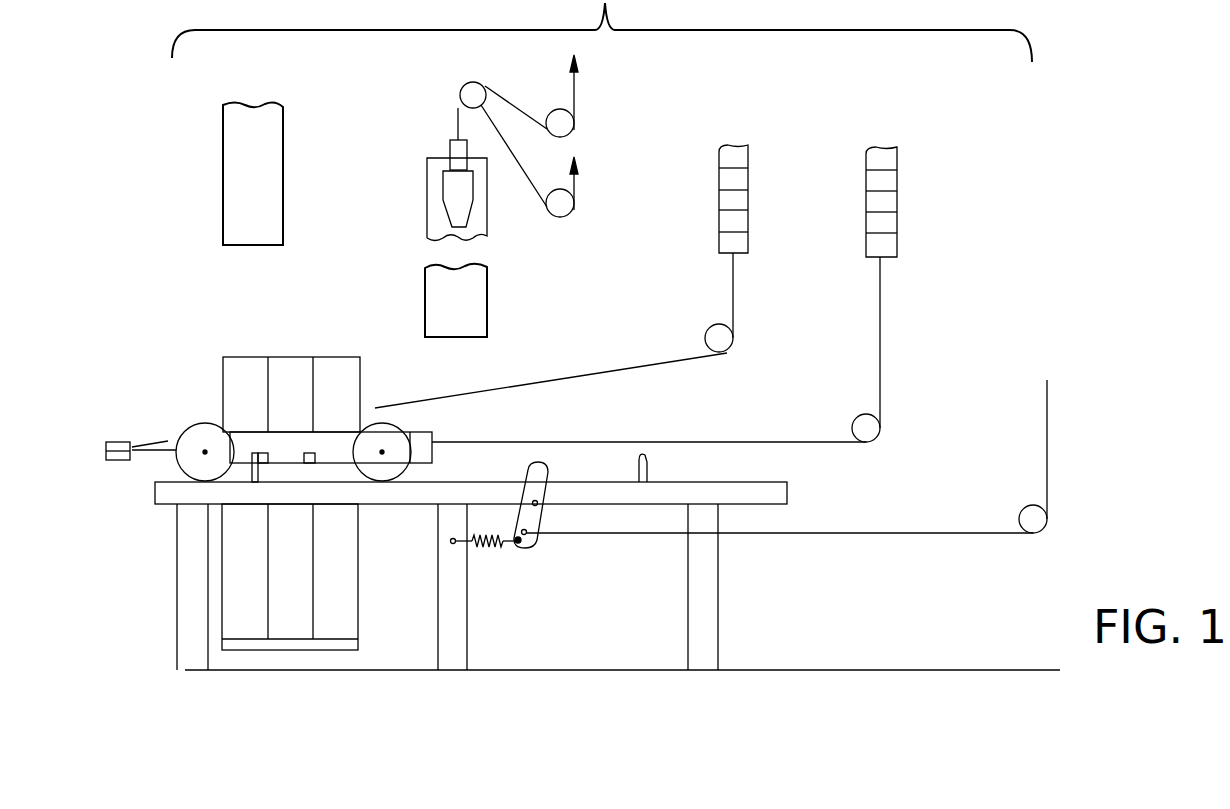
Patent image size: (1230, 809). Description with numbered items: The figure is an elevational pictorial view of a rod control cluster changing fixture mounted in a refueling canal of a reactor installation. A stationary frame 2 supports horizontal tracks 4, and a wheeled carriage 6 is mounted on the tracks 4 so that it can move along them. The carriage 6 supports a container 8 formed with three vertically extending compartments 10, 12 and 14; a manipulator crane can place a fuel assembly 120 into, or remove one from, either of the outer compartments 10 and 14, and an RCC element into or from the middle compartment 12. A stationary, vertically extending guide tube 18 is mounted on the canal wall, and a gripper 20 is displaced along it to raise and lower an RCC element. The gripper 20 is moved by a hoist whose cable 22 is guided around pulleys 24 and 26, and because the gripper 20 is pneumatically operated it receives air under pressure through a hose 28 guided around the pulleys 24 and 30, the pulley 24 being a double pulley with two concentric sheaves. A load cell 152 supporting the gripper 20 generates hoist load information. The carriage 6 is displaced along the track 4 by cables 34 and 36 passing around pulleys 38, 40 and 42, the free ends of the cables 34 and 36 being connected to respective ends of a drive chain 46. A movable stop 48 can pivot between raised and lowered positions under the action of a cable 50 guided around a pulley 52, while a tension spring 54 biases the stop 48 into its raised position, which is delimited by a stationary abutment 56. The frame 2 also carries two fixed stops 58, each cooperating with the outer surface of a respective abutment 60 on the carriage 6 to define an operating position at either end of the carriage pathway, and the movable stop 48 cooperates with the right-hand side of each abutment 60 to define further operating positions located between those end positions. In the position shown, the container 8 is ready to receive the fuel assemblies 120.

The stationary frame 2 is at (700, 612).
The horizontal tracks 4 is at (775, 497).
The wheeled carriage 6 is at (245, 437).
The container 8 is at (207, 678).
The compartment 10 is at (234, 579).
The compartment 12 is at (282, 579).
The compartment 14 is at (325, 579).
The guide tube 18 is at (432, 303).
The gripper 20 is at (455, 195).
The cable 22 is at (575, 187).
The double pulley 24 is at (466, 94).
The pulley 26 is at (562, 205).
The hose 28 is at (575, 98).
The pulley 30 is at (553, 123).
The cable 34 is at (695, 442).
The cable 36 is at (592, 373).
The pulley 38 is at (118, 442).
The pulley 40 is at (862, 425).
The pulley 42 is at (712, 337).
The drive chain 46 is at (867, 222).
The movable stop 48 is at (540, 508).
The cable 50 is at (963, 535).
The pulley 52 is at (1020, 515).
The tension spring 54 is at (485, 550).
The stationary abutment 56 is at (550, 478).
The fixed stops 58 is at (252, 482).
The abutment 60 is at (303, 458).
The fuel assembly 120 is at (257, 180).
The load cell 152 is at (452, 147).